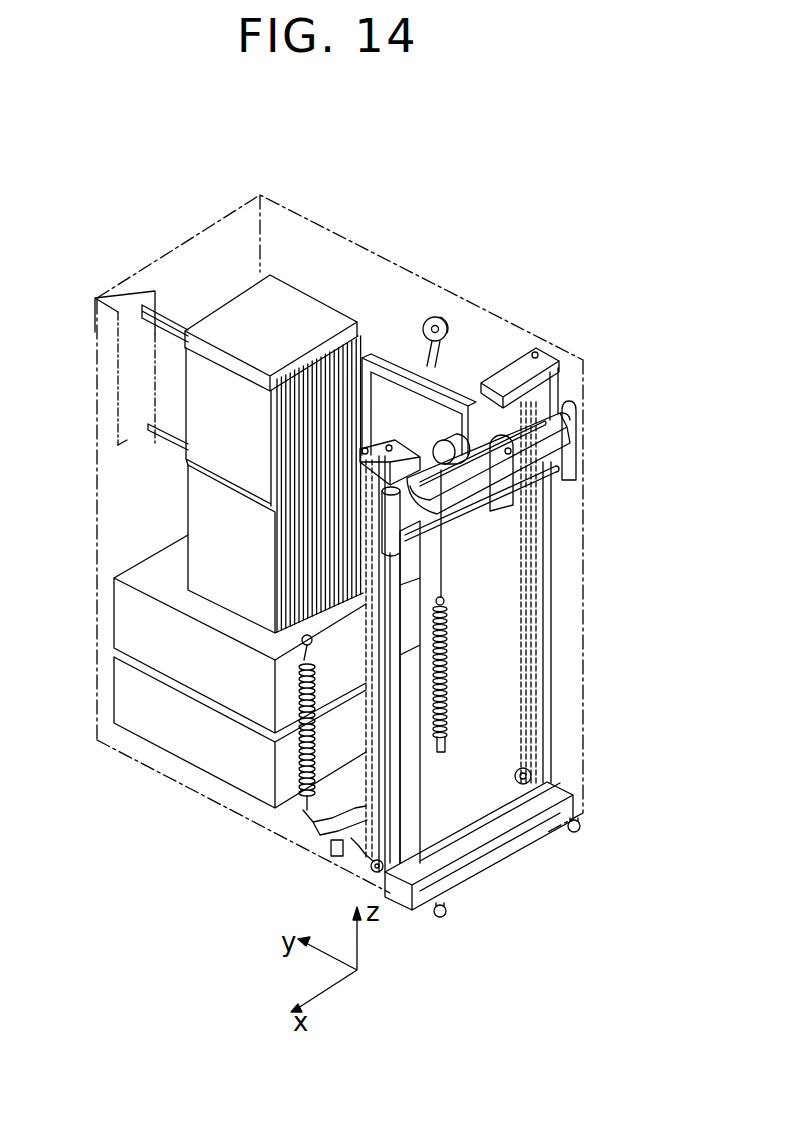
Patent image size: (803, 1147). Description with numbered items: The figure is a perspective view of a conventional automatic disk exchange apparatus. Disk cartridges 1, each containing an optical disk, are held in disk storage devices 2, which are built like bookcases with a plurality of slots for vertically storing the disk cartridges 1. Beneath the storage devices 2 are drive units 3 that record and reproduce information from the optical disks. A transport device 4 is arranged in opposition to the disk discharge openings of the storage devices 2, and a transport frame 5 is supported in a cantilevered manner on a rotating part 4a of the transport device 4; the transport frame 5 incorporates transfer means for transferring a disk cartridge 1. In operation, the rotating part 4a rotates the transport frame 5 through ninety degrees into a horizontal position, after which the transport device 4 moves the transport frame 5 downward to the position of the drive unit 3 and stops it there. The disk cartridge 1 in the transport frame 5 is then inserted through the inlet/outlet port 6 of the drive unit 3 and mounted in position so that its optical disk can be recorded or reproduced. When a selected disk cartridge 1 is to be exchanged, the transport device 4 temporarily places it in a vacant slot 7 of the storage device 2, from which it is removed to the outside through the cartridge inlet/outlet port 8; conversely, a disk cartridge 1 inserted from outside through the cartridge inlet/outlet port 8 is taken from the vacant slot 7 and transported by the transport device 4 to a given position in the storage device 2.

The disk cartridge 1 is at (345, 378).
The disk storage device 2 is at (193, 402).
The drive unit 3 is at (128, 613).
The transport device 4 is at (573, 455).
The rotating part 4a is at (475, 442).
The transport frame 5 is at (393, 357).
The inlet/outlet port 6 is at (299, 738).
The vacant slot 7 is at (286, 362).
The cartridge inlet/outlet port 8 is at (127, 308).